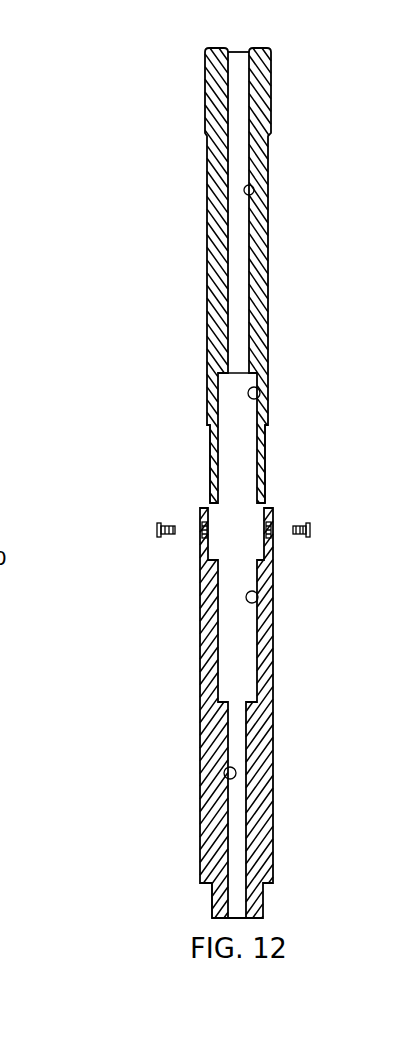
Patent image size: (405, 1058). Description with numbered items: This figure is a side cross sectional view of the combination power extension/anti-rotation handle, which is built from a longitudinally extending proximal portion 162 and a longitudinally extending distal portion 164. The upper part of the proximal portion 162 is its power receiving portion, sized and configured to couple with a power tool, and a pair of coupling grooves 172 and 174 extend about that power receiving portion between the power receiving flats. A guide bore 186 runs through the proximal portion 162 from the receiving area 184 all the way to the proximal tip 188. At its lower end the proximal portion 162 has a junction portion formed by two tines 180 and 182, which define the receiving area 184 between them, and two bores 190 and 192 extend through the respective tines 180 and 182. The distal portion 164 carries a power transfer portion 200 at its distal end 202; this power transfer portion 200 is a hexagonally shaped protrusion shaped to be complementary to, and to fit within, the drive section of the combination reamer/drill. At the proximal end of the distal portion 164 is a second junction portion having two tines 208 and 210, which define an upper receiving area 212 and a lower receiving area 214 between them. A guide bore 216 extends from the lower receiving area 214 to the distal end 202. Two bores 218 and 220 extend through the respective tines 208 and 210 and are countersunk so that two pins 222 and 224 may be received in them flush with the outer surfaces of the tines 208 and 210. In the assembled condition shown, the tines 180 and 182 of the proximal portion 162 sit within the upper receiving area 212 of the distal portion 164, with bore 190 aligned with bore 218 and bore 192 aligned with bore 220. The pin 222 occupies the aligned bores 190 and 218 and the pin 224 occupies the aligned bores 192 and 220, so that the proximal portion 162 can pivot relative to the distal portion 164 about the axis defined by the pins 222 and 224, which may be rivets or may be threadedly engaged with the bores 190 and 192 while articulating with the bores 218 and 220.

The proximal portion 162 is at (182, 273).
The distal portion 164 is at (206, 698).
The coupling groove 172 is at (268, 135).
The coupling groove 174 is at (206, 138).
The tine 180 is at (209, 437).
The tine 182 is at (265, 437).
The receiving area 184 is at (260, 392).
The guide bore 186 is at (254, 189).
The proximal tip 188 is at (266, 46).
The bore 190 is at (210, 474).
The bore 192 is at (265, 474).
The power transfer portion 200 is at (212, 900).
The distal end 202 is at (308, 900).
The tine 208 is at (200, 630).
The tine 210 is at (273, 644).
The upper receiving area 212 is at (204, 513).
The lower receiving area 214 is at (258, 598).
The guide bore 216 is at (224, 774).
The bore 218 is at (200, 534).
The bore 220 is at (273, 533).
The pin 222 is at (157, 530).
The pin 224 is at (311, 530).